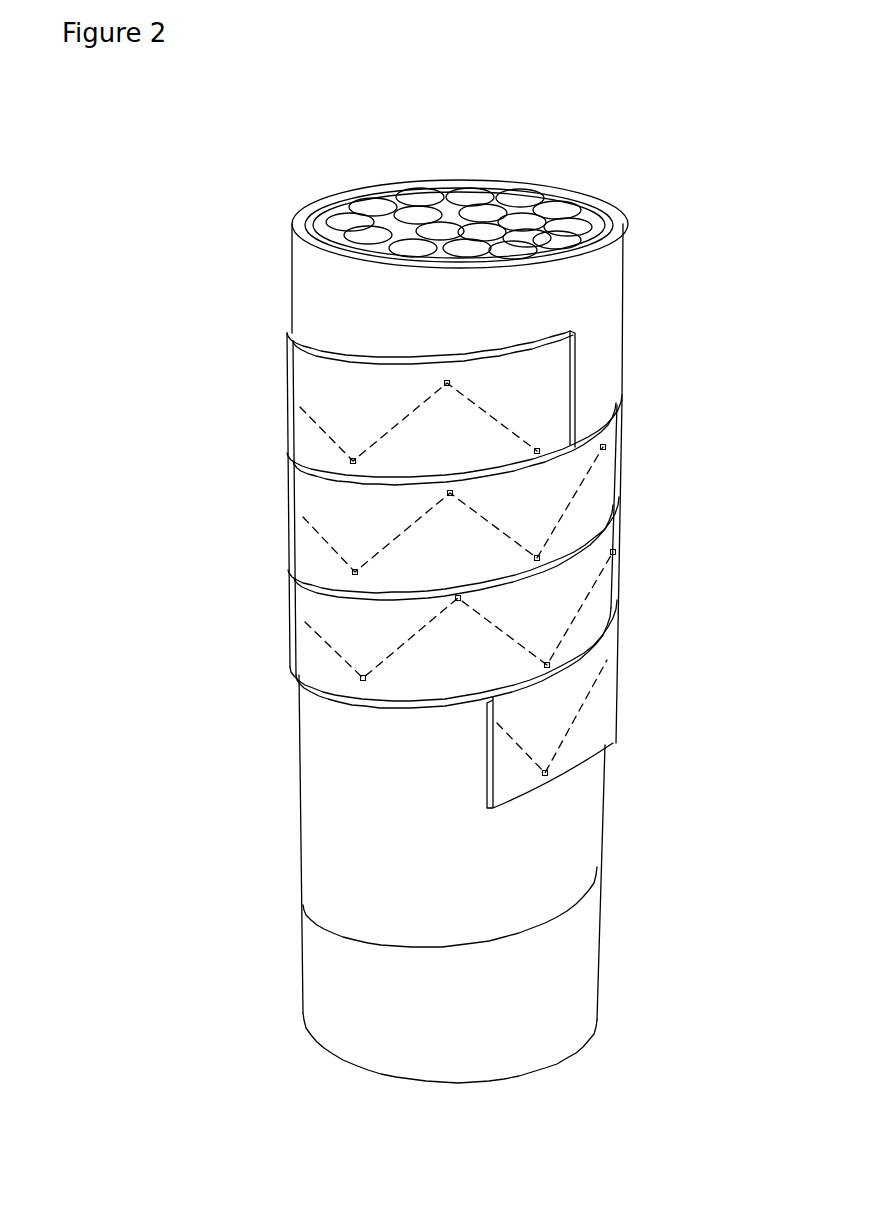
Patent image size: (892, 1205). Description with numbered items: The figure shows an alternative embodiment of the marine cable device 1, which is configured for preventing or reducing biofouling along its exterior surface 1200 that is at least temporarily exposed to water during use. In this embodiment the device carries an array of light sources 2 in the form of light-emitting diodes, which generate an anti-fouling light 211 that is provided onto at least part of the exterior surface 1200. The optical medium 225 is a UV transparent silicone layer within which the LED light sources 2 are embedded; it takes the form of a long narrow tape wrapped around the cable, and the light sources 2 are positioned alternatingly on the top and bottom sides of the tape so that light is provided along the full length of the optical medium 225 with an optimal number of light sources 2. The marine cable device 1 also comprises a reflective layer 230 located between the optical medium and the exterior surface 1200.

The marine cable device 1 is at (260, 151).
The exterior surface 1200 is at (293, 282).
The light source 2 is at (448, 382).
The anti-fouling light 211 is at (505, 403).
The optical medium 225 is at (421, 680).
The reflective layer 230 is at (568, 830).